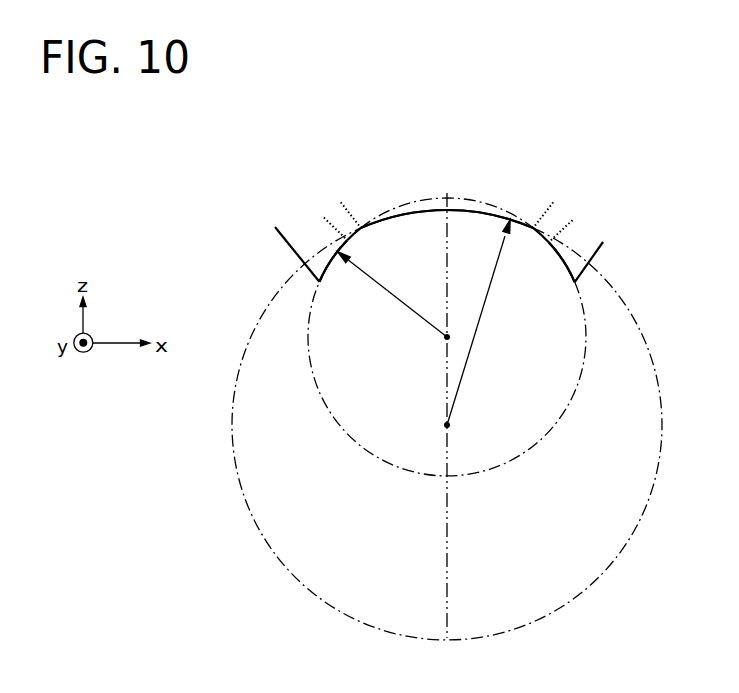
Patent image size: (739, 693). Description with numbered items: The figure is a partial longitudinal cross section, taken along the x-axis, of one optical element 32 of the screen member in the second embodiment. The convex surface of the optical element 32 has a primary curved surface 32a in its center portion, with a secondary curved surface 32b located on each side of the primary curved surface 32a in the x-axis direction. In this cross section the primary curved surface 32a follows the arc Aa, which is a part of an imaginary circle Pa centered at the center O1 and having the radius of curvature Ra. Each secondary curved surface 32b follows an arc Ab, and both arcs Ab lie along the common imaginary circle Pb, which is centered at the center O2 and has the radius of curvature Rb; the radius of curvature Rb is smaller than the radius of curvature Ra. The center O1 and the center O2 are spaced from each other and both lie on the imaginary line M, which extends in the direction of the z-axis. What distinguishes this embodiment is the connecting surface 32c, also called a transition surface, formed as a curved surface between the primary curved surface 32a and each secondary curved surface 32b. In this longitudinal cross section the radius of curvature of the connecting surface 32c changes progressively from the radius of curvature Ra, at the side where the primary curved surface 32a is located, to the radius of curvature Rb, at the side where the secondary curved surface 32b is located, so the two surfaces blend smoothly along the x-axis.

The optical element 32 is at (468, 190).
The primary curved surface 32a is at (438, 210).
The secondary curved surface 32b is at (335, 255).
The connecting surface 32c is at (353, 235).
The arc Aa is at (421, 212).
The arc Ab is at (330, 246).
The radius of curvature Ra is at (482, 323).
The radius of curvature Rb is at (392, 295).
The center O1 is at (447, 425).
The center O2 is at (447, 338).
The imaginary circle Pa is at (260, 532).
The imaginary circle Pb is at (336, 420).
The imaginary line M is at (447, 555).